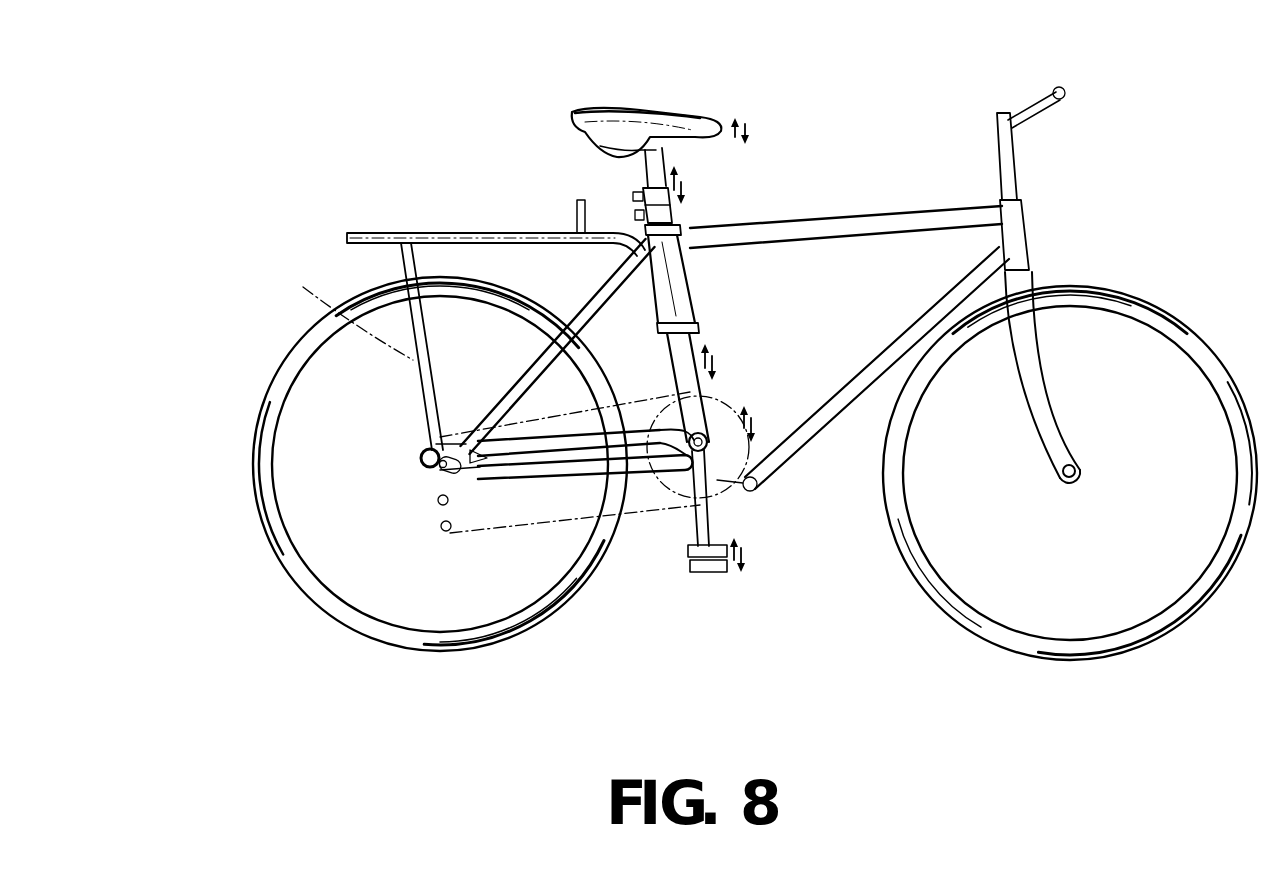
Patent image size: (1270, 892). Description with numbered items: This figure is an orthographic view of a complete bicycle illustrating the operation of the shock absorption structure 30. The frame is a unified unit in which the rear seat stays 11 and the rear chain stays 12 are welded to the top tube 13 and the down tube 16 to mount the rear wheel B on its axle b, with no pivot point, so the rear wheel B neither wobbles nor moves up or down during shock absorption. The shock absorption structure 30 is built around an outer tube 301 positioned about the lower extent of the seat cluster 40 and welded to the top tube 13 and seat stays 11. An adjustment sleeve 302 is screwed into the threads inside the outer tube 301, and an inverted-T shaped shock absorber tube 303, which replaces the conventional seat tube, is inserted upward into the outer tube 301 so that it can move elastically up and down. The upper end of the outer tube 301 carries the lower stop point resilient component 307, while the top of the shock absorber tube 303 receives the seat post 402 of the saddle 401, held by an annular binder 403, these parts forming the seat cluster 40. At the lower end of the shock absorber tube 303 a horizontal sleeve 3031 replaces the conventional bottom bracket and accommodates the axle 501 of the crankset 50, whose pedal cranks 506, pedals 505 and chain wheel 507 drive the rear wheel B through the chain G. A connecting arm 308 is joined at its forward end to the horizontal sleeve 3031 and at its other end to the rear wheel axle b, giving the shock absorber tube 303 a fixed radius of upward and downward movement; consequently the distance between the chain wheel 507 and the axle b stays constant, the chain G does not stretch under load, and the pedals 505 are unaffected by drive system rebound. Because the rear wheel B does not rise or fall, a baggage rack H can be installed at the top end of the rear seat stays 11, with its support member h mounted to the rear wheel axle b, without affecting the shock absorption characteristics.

The seat stays 11 is at (578, 320).
The rear chain stays 12 is at (570, 512).
The top tube 13 is at (880, 209).
The down tube 16 is at (947, 298).
The shock absorption structure 30 is at (710, 290).
The outer tube 301 is at (690, 277).
The adjustment sleeve 302 is at (698, 333).
The shock absorber tube 303 is at (677, 217).
The lower stop point resilient component 307 is at (681, 228).
The connecting arm 308 is at (577, 450).
The horizontal sleeve 3031 is at (760, 468).
The seat cluster 40 is at (648, 102).
The saddle 401 is at (680, 116).
The seat post 402 is at (612, 150).
The annular binder 403 is at (634, 197).
The crankset 50 is at (707, 584).
The axle 501 is at (733, 493).
The pedals 505 is at (692, 565).
The pedal cranks 506 is at (702, 505).
The chain wheel 507 is at (742, 400).
The front wheel A is at (1000, 636).
The rear wheel B is at (340, 607).
The axle b is at (422, 464).
The chain G is at (545, 520).
The baggage rack H is at (433, 235).
The support member h is at (375, 352).